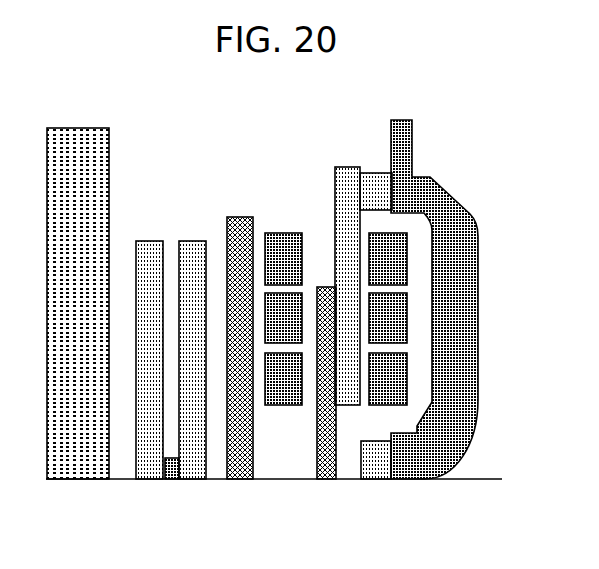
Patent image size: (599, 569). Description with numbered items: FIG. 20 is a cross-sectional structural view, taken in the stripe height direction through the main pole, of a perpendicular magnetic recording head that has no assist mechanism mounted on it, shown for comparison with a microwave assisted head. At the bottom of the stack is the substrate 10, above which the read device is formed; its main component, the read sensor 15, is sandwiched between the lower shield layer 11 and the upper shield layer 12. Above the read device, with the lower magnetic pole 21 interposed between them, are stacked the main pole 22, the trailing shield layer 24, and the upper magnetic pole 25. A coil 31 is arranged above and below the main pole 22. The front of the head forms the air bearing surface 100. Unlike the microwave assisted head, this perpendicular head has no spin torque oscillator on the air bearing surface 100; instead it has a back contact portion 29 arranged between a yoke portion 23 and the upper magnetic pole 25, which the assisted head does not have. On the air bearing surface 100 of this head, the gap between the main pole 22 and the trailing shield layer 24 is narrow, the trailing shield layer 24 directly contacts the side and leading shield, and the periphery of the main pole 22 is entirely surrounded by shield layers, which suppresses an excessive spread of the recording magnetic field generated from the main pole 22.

The substrate 10 is at (72, 465).
The lower shield layer 11 is at (151, 247).
The upper shield layer 12 is at (190, 247).
The read sensor 15 is at (170, 470).
The lower magnetic pole 21 is at (237, 482).
The main pole 22 is at (320, 482).
The yoke portion 23 is at (343, 170).
The trailing shield layer 24 is at (374, 481).
The upper magnetic pole 25 is at (440, 460).
The back contact portion 29 is at (373, 176).
The coil 31 is at (282, 237).
The air bearing surface 100 is at (485, 482).